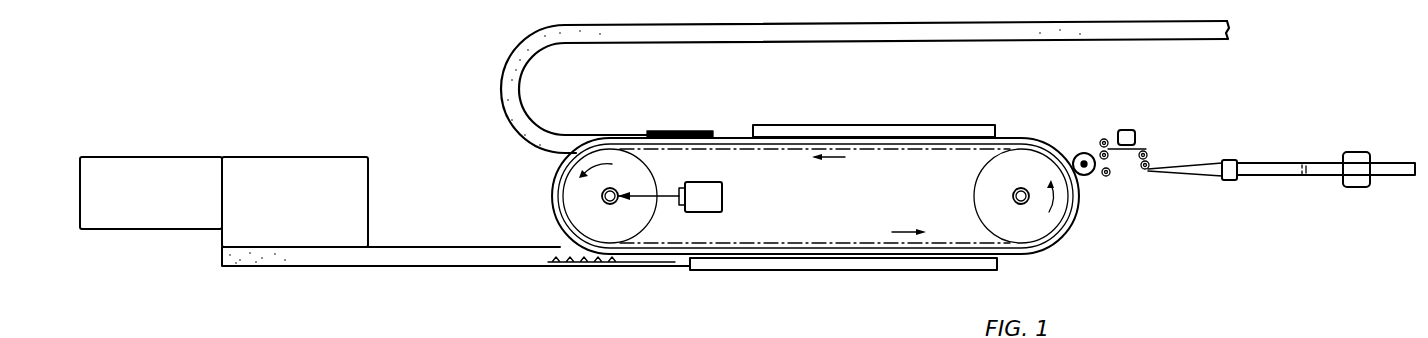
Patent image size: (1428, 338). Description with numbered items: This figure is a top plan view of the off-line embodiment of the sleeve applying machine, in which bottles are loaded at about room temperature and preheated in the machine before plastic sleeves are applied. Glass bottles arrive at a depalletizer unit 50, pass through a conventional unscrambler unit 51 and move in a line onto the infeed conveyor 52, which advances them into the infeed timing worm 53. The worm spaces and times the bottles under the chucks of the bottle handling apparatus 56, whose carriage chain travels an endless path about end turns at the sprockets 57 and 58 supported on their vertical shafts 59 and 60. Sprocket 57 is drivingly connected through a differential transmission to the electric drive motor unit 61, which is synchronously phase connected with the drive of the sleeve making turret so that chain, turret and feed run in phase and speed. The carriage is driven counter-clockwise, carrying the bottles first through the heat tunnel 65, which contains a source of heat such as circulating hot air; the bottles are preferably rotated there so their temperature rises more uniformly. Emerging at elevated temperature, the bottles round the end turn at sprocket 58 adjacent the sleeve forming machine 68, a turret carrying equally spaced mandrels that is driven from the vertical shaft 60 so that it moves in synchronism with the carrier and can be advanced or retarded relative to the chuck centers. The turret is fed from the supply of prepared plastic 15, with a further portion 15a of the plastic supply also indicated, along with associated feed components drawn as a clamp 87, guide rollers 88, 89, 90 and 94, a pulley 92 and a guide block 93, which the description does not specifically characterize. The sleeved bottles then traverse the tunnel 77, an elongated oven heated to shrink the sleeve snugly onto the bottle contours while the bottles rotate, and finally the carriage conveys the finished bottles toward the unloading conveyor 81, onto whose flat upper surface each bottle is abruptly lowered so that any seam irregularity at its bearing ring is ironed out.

The prepared plastic 15 is at (1205, 174).
The plastic supply portion 15a is at (1386, 177).
The depalletizer unit 50 is at (166, 203).
The unscrambler unit 51 is at (303, 203).
The infeed conveyor 52 is at (447, 247).
The infeed timing worm 53 is at (588, 263).
The bottle handling apparatus 56 is at (883, 193).
The sprocket 57 is at (620, 238).
The sprocket 58 is at (1038, 235).
The vertical shaft 59 is at (600, 196).
The vertical shaft 60 is at (1000, 200).
The electric drive motor unit 61 is at (725, 187).
The heat tunnel 65 is at (803, 270).
The sleeve forming machine 68 is at (1072, 246).
The tunnel 77 is at (816, 127).
The unloading conveyor 81 is at (648, 135).
The clamp 87 is at (1362, 152).
The guide roller 88 is at (1147, 152).
The guide roller 89 is at (1141, 169).
The guide rollers 90 is at (1100, 136).
The pulley 92 is at (1076, 155).
The guide block 93 is at (1134, 131).
The guide roller 94 is at (1106, 177).